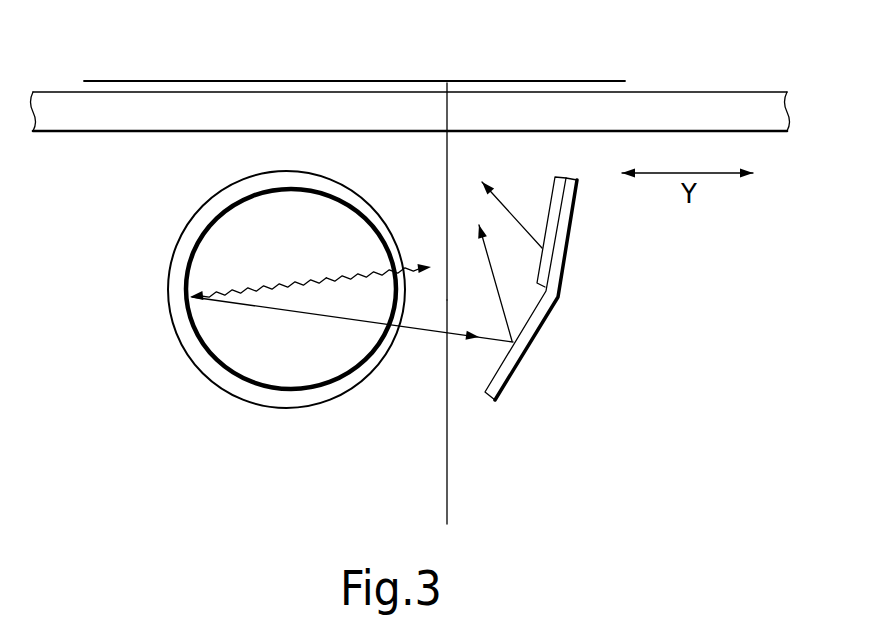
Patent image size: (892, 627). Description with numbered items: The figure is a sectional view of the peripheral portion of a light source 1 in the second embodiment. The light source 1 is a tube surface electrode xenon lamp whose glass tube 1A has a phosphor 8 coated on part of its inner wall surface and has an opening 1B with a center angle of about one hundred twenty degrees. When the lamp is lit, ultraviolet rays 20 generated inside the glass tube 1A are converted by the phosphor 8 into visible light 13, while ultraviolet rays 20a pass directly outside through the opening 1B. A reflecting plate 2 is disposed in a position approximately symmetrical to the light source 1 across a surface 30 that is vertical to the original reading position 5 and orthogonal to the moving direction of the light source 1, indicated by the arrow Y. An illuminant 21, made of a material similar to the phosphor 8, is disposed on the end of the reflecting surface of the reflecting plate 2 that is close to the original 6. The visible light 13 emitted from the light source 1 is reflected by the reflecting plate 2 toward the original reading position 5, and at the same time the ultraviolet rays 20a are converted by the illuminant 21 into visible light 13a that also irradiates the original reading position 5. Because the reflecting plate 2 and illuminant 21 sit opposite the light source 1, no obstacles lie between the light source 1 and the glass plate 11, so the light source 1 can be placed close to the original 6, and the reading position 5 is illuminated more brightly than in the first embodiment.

The light source 1 is at (245, 290).
The glass tube 1A is at (178, 249).
The opening 1B is at (287, 290).
The reflecting plate 2 is at (561, 292).
The original reading position 5 is at (450, 89).
The original 6 is at (194, 82).
The phosphor 8 is at (227, 368).
The glass plate 11 is at (706, 100).
The visible light 13 is at (421, 329).
The visible light 13a is at (511, 212).
The ultraviolet rays 20 is at (313, 246).
The ultraviolet rays 20a is at (355, 275).
The illuminant 21 is at (556, 209).
The surface 30 is at (448, 488).